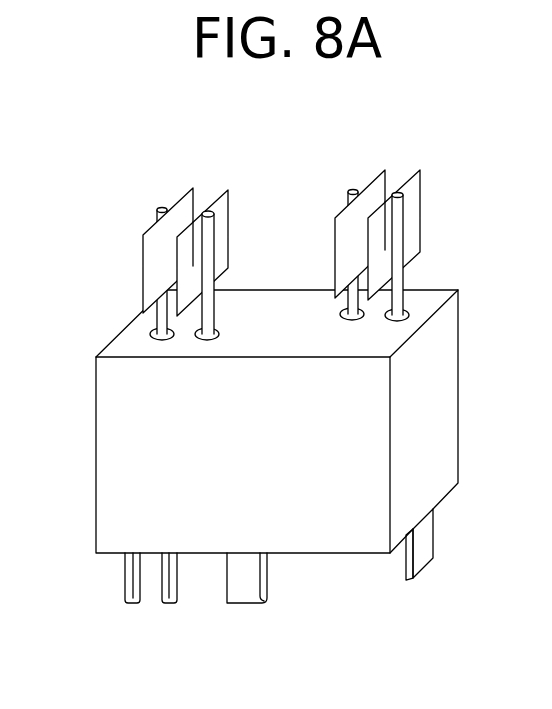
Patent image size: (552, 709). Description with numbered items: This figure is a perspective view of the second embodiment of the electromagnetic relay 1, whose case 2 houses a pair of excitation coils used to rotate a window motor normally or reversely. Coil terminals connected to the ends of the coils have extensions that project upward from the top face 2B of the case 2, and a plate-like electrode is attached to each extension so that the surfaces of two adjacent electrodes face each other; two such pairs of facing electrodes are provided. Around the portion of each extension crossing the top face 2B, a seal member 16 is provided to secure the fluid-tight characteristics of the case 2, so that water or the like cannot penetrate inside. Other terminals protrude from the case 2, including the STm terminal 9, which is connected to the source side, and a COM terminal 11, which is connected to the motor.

The electromagnetic relay 1 is at (284, 262).
The case 2 is at (112, 400).
The top face 2B is at (397, 338).
The STm terminal 9 is at (242, 597).
The COM terminal 11 is at (418, 550).
The seal member 16 is at (148, 333).